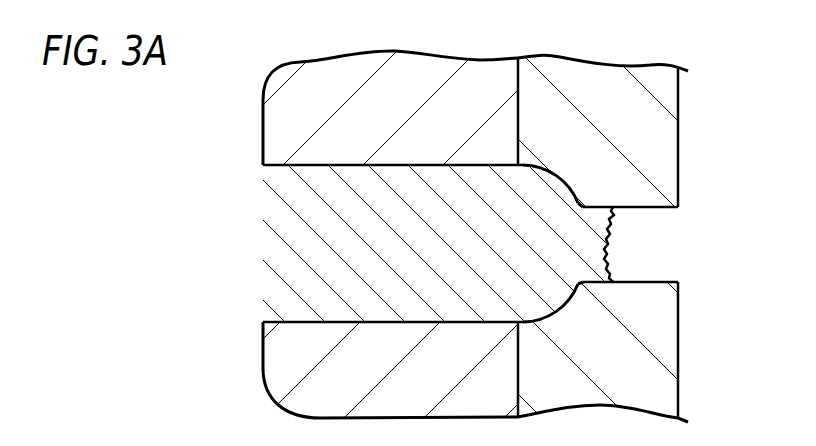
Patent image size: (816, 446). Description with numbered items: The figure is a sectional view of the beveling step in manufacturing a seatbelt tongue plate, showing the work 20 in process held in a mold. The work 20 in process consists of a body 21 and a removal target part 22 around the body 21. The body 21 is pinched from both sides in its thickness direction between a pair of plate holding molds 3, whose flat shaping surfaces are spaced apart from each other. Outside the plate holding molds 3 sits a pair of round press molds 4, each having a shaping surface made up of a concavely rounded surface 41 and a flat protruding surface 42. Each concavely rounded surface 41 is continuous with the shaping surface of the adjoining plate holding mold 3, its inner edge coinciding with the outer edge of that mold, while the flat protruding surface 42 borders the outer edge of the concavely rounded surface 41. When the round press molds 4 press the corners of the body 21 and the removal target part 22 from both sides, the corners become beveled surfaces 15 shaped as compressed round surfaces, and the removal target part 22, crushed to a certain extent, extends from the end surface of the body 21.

The plate holding mold 3 is at (285, 128).
The round press mold 4 is at (667, 142).
The beveled surface 15 is at (553, 168).
The work in process 20 is at (277, 212).
The body 21 is at (292, 265).
The removal target part 22 is at (602, 250).
The concavely rounded surface 41 is at (565, 191).
The flat protruding surface 42 is at (665, 208).